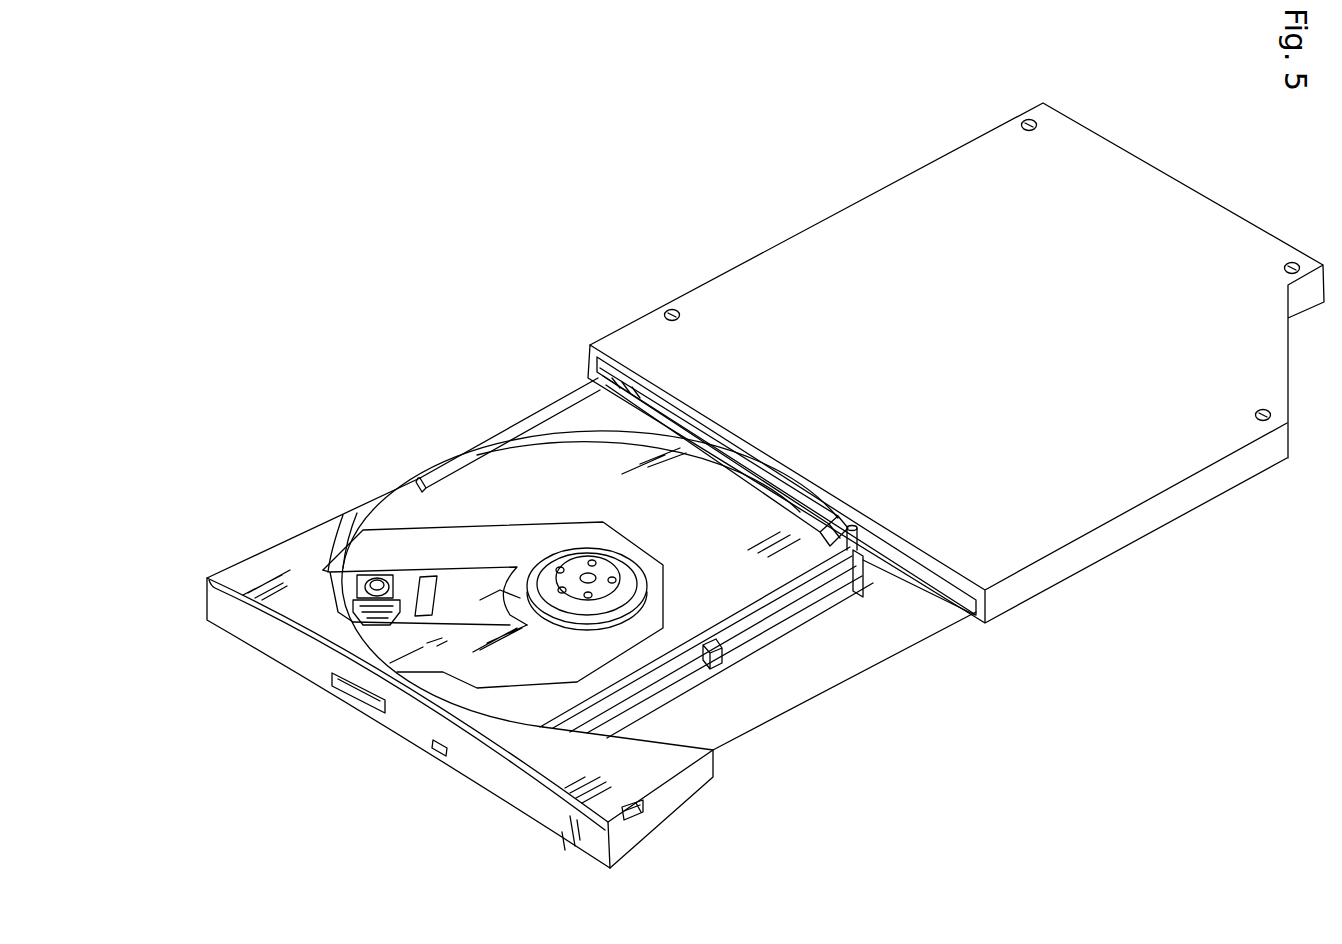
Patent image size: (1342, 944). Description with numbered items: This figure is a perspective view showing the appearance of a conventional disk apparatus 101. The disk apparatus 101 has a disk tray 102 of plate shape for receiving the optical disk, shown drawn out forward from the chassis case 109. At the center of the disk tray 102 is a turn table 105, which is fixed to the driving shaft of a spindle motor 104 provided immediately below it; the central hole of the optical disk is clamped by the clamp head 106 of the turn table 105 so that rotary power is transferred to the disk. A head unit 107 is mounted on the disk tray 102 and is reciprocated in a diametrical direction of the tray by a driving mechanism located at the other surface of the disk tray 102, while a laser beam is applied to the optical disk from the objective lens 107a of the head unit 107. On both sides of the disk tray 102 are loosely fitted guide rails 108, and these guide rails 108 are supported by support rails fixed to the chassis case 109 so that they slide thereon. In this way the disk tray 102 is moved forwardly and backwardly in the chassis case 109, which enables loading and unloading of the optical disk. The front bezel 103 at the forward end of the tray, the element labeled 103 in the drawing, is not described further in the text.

The disk apparatus 101 is at (956, 363).
The disk tray 102 is at (408, 508).
The front bezel of tray 103 is at (481, 775).
The spindle motor 104 is at (507, 600).
The turn table 105 is at (631, 563).
The clamp head 106 is at (610, 568).
The head unit 107 is at (481, 587).
The objective lens 107a is at (373, 577).
The guide rails 108 is at (748, 643).
The chassis case 109 is at (871, 216).